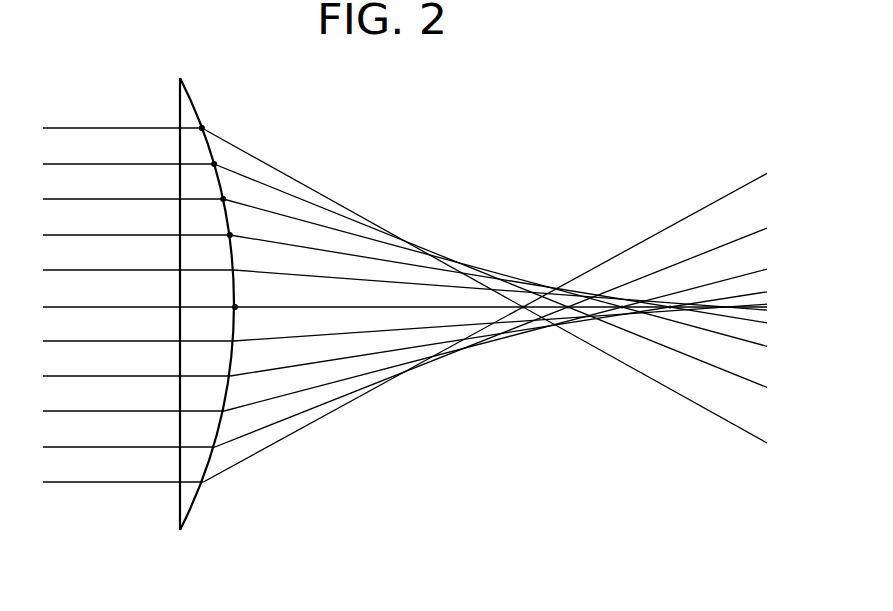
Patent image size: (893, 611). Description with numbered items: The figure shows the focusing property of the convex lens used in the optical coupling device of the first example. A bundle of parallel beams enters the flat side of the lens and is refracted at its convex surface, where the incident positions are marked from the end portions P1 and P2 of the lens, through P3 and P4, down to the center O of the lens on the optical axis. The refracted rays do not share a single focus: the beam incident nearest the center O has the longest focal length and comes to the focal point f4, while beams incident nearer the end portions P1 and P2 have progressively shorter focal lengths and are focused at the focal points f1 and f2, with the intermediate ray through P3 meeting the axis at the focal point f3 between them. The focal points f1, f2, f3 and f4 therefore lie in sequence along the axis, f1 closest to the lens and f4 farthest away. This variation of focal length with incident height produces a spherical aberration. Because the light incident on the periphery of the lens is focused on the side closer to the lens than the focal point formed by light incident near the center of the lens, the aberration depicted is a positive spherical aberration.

The end portion of the lens P1 is at (405, 275).
The end portion of the lens P2 is at (405, 264).
The third incident point on lens surface P3 is at (405, 261).
The fourth incident point on lens surface P4 is at (405, 267).
The center of the lens O is at (405, 318).
The focal point f1 is at (524, 312).
The focal point f2 is at (569, 312).
The third focal point f3 is at (622, 312).
The focal point f4 is at (670, 312).